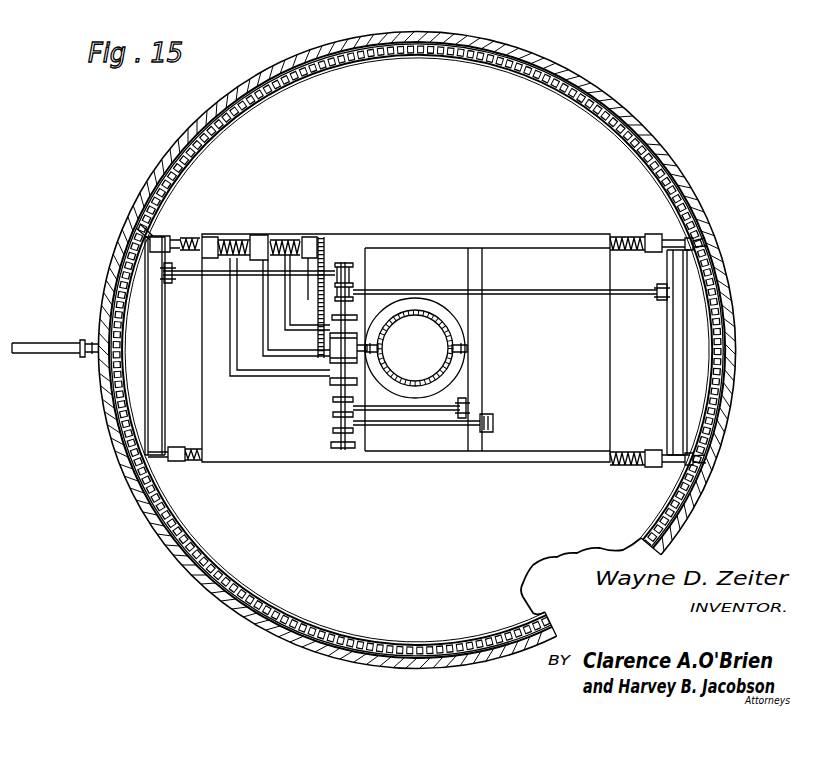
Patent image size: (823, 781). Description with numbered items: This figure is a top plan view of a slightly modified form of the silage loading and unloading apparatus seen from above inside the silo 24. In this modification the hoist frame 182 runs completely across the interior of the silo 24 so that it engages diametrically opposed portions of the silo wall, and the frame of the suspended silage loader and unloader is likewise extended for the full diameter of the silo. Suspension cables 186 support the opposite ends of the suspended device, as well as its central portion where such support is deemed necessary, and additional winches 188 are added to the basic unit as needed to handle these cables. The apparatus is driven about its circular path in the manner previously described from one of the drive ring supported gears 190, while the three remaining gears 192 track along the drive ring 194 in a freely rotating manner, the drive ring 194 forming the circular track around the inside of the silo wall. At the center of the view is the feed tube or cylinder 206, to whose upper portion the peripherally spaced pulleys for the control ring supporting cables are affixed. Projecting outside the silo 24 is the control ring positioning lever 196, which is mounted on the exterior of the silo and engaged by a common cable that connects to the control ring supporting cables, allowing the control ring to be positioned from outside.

The silo 24 is at (667, 145).
The hoist frame 182 is at (583, 240).
The suspension cables 186 is at (193, 270).
The winches 188 is at (344, 262).
The drive ring supported gear 190 is at (152, 234).
The remaining gears 192 is at (693, 242).
The drive ring 194 is at (195, 552).
The control ring positioning lever 196 is at (43, 343).
The feed tube or cylinder 206 is at (464, 334).